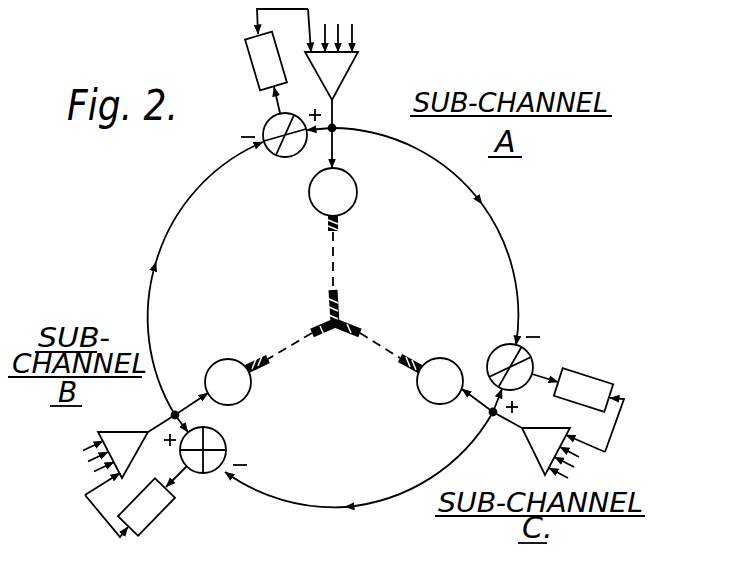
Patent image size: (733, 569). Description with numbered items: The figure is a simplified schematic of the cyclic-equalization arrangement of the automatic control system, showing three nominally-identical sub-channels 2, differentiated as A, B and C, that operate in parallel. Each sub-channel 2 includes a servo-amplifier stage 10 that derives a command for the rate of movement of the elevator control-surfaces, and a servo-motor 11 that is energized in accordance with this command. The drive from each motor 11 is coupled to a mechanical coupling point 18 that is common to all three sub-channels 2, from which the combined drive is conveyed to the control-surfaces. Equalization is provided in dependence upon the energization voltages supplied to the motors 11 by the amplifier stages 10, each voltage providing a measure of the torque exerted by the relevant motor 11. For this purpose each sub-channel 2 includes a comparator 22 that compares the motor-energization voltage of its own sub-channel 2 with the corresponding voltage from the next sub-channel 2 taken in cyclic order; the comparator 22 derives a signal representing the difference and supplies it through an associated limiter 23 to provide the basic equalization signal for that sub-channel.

The servo-amplifier stage 10 is at (334, 72).
The servo-motor 11 is at (355, 204).
The comparator 22 is at (288, 156).
The limiter 23 is at (254, 68).
The sub-channel 2 is at (356, 278).
The mechanical coupling point 18 is at (335, 326).